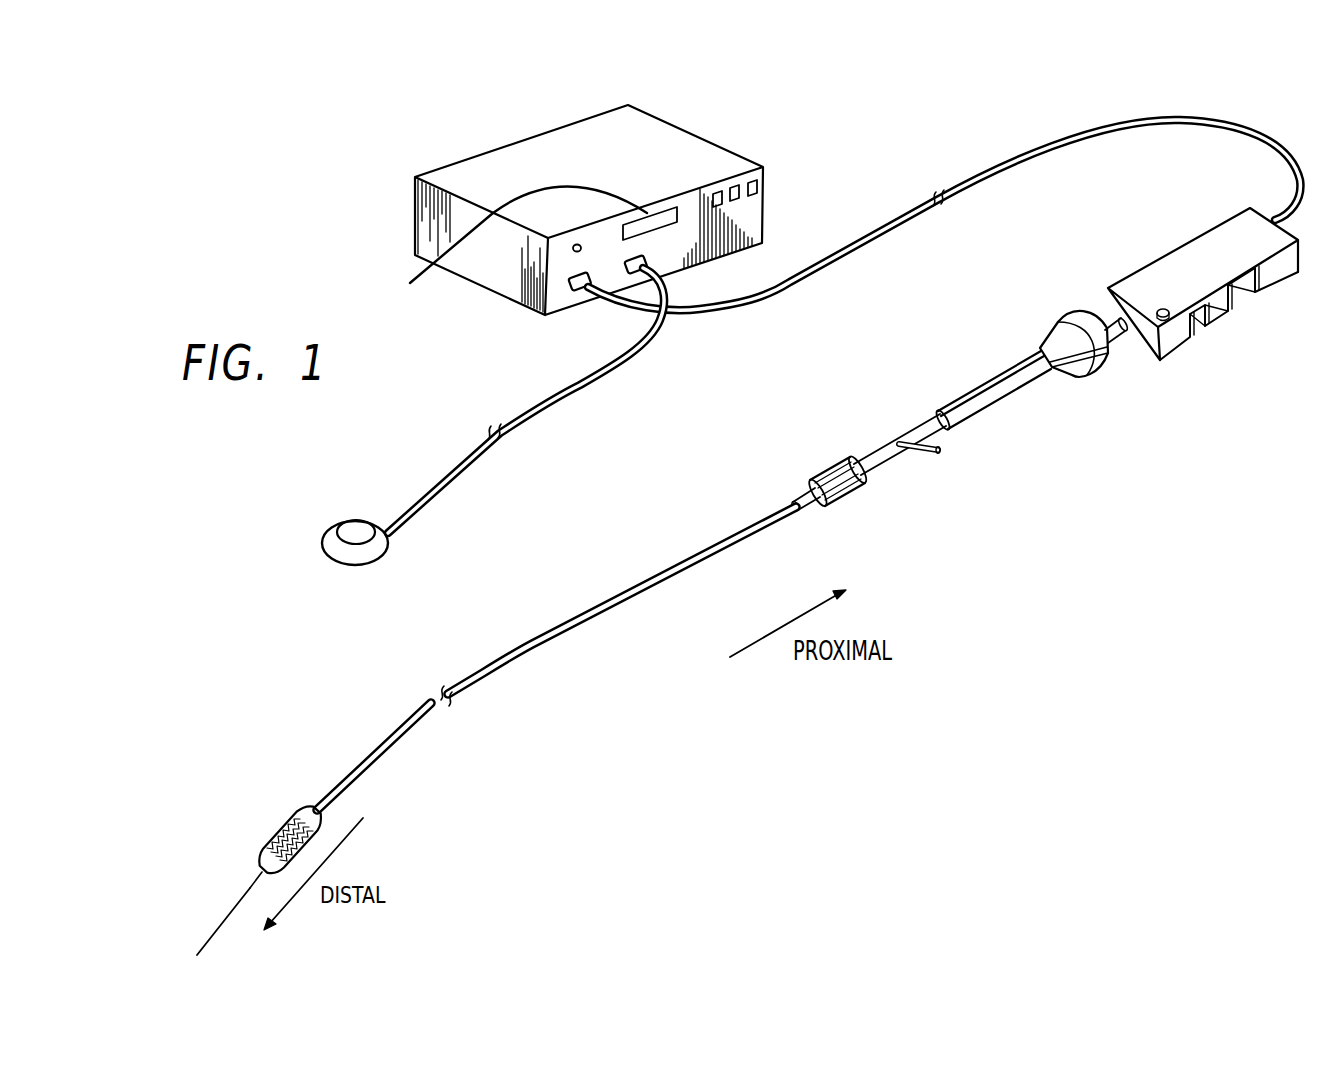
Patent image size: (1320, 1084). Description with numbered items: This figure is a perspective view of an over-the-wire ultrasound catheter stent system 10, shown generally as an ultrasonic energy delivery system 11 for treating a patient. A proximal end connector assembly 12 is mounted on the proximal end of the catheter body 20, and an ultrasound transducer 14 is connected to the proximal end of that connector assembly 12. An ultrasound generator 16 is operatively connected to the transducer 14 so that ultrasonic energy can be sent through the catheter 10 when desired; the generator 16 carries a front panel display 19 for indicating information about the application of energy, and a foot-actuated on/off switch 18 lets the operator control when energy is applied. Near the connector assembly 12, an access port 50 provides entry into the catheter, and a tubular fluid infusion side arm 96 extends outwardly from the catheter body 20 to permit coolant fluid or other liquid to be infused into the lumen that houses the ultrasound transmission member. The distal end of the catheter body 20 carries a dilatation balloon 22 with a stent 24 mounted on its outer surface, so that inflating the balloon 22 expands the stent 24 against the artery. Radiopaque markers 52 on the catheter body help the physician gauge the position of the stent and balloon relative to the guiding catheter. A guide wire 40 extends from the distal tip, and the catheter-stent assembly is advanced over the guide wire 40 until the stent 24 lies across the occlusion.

The over-the-wire ultrasound catheter stent system 10 is at (387, 731).
The laser catheter system 11 is at (870, 165).
The proximal end connector assembly 12 is at (793, 445).
The ultrasound transducer 14 is at (1185, 245).
The ultrasound generator 16 is at (688, 132).
The foot-actuated on/off switch 18 is at (357, 518).
The front panel display 19 is at (514, 246).
The catheter body 20 is at (423, 703).
The dilatation balloon 22 is at (307, 813).
The stent 24 is at (262, 870).
The guide wire 40 is at (213, 937).
The access port 50 is at (777, 510).
The radiopaque markers 52 is at (316, 790).
The tubular fluid infusion side arm 96 is at (940, 450).